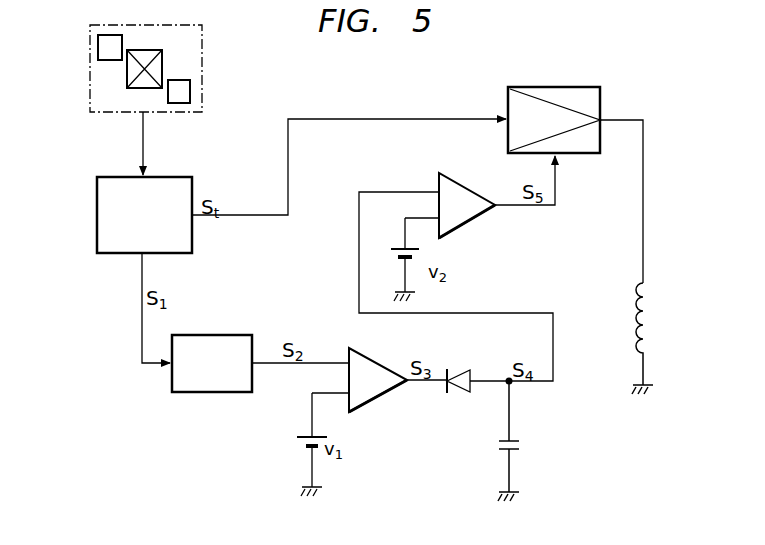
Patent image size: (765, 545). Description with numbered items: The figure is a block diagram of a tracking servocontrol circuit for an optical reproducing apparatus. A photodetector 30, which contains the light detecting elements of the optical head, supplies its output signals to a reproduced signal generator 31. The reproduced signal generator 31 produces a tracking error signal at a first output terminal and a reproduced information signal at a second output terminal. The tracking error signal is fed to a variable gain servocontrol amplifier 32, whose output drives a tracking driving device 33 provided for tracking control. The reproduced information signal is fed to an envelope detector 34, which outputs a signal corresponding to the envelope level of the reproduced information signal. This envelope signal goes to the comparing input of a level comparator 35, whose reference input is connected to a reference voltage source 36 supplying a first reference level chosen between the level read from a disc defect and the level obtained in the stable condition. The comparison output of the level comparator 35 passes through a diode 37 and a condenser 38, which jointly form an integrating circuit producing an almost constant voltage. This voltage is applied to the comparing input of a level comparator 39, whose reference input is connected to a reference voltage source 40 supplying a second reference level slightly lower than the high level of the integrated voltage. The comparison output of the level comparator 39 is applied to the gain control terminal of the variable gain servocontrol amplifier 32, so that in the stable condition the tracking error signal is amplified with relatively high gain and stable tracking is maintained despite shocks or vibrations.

The photodetector 30 is at (203, 42).
The reproduced signal generator 31 is at (171, 177).
The variable gain servocontrol amplifier 32 is at (540, 85).
The tracking driving device 33 is at (635, 320).
The envelope detector 34 is at (217, 335).
The level comparator 35 is at (372, 402).
The reference voltage source 36 is at (296, 444).
The diode 37 is at (460, 396).
The condenser 38 is at (522, 447).
The level comparator 39 is at (468, 222).
The reference voltage source 40 is at (392, 253).